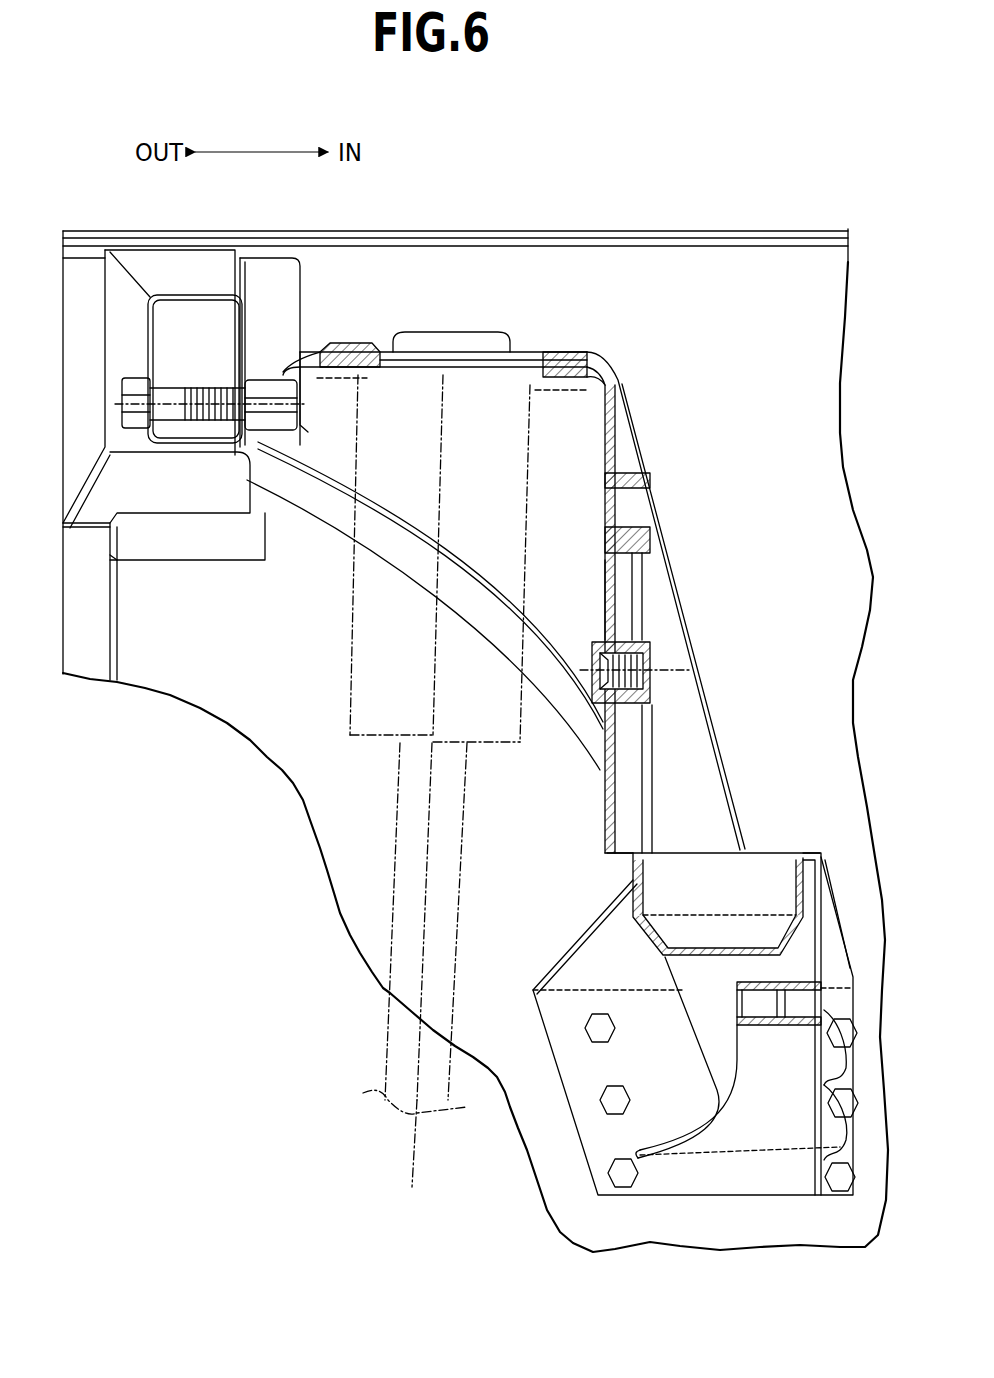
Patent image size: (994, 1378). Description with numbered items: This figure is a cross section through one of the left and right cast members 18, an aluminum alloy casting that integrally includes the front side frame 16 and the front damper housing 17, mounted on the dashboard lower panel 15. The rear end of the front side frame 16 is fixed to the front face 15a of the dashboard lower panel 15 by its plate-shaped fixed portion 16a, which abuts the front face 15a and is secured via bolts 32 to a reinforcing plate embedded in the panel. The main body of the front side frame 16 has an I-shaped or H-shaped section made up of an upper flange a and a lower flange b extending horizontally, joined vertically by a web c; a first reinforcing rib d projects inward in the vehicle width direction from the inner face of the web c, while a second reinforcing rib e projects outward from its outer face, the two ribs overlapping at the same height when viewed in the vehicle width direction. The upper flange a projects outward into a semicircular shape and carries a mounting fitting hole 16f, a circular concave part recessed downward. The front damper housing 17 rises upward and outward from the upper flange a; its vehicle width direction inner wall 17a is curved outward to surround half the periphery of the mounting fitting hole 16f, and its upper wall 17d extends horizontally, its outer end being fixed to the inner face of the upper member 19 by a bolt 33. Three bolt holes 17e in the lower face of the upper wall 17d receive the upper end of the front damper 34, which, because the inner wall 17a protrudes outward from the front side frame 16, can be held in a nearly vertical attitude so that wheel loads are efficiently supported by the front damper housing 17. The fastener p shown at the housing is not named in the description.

The dashboard lower panel 15 is at (583, 226).
The front face of the dashboard lower panel 15a is at (802, 505).
The front side frame 16 is at (758, 851).
The fixed portion 16a is at (742, 1185).
The mounting fitting hole 16f is at (645, 885).
The front damper housing 17 is at (703, 713).
The vehicle width direction inner wall 17a is at (613, 608).
The upper wall 17d is at (483, 355).
The bolt holes 17e is at (345, 343).
The cast member 18 is at (827, 673).
The upper member 19 is at (172, 257).
The bolts 32 is at (620, 1172).
The bolt 33 is at (208, 392).
The front damper 34 is at (350, 599).
The fastening bolt p is at (648, 665).
The upper flange a is at (807, 853).
The lower flange b is at (758, 1025).
The web c is at (783, 995).
The first reinforcing rib d is at (797, 983).
The second reinforcing rib e is at (742, 982).